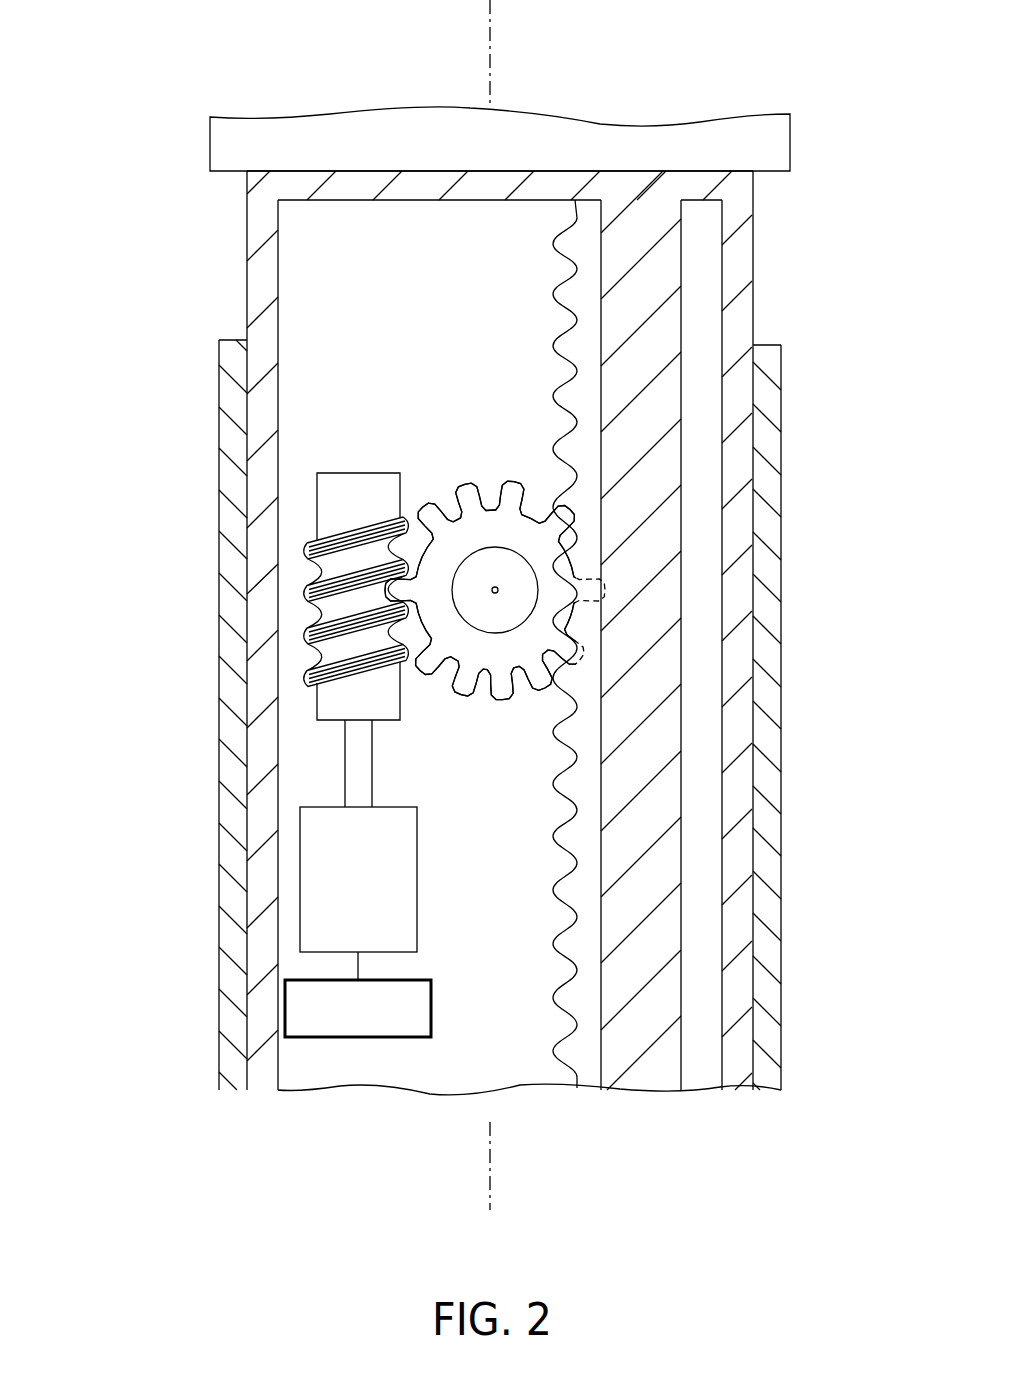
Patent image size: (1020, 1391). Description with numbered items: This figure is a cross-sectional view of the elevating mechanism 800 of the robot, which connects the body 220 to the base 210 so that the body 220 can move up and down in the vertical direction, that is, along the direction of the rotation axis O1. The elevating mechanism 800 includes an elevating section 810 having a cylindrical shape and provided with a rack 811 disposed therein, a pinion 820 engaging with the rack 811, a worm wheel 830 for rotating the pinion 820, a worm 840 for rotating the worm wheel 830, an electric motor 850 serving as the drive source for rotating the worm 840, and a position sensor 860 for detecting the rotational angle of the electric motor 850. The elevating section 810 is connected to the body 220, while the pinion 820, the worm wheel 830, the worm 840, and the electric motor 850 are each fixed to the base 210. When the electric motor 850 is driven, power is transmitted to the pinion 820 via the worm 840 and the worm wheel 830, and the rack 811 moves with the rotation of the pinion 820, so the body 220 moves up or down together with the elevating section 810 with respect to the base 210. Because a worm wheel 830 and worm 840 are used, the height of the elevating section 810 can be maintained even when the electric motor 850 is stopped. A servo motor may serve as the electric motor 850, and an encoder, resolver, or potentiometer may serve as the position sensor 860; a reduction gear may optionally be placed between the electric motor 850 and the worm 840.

The rotation axis O1 is at (493, 32).
The body 220 is at (262, 133).
The elevating mechanism 800 is at (196, 222).
The base 210 is at (237, 562).
The elevating section 810 is at (738, 258).
The rack 811 is at (572, 400).
The pinion 820 is at (500, 662).
The worm wheel 830 is at (512, 492).
The worm 840 is at (360, 487).
The electric motor 850 is at (322, 878).
The position sensor 860 is at (305, 1037).